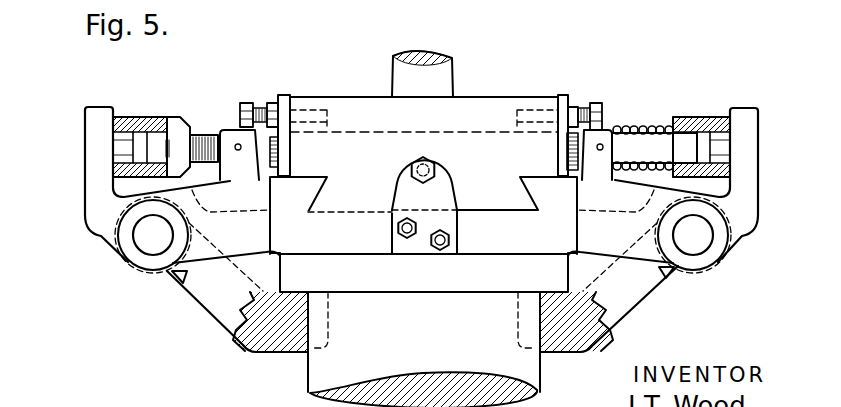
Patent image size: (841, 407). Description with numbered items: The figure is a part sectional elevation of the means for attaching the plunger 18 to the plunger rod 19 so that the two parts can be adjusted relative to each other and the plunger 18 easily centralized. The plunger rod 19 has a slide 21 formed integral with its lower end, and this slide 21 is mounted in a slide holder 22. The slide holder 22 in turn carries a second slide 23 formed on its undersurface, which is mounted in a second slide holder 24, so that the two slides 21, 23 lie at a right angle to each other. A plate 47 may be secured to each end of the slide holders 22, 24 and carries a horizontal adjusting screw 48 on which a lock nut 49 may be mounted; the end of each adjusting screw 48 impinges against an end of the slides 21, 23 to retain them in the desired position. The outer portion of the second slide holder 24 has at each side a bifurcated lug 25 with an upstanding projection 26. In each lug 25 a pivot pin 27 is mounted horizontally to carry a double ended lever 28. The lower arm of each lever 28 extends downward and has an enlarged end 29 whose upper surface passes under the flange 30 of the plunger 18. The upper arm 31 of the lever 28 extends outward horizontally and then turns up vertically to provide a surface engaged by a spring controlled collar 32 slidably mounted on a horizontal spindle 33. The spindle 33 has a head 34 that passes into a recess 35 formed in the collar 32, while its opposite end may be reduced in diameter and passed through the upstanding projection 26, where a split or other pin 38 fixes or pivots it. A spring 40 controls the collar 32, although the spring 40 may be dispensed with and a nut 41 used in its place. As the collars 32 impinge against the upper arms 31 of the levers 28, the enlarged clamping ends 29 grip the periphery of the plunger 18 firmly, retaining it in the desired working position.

The plunger 18 is at (424, 349).
The plunger rod 19 is at (422, 74).
The slide 21 is at (326, 128).
The slide holder 22 is at (424, 136).
The second slide 23 is at (494, 203).
The second slide holder 24 is at (331, 215).
The bifurcated lug 25 is at (180, 281).
The upstanding projection 26 is at (233, 133).
The pivot pin 27 is at (145, 242).
The double ended lever 28 is at (220, 312).
The enlarged end 29 is at (331, 326).
The flange 30 is at (424, 273).
The upper arm 31 is at (92, 152).
The collar 32 is at (134, 117).
The horizontal spindle 33 is at (206, 135).
The head 34 is at (137, 157).
The recess 35 is at (118, 138).
The split pin 38 is at (238, 150).
The spring 40 is at (650, 128).
The nut 41 is at (180, 117).
The plate 47 is at (282, 96).
The adjusting screw 48 is at (310, 108).
The lock nut 49 is at (277, 127).